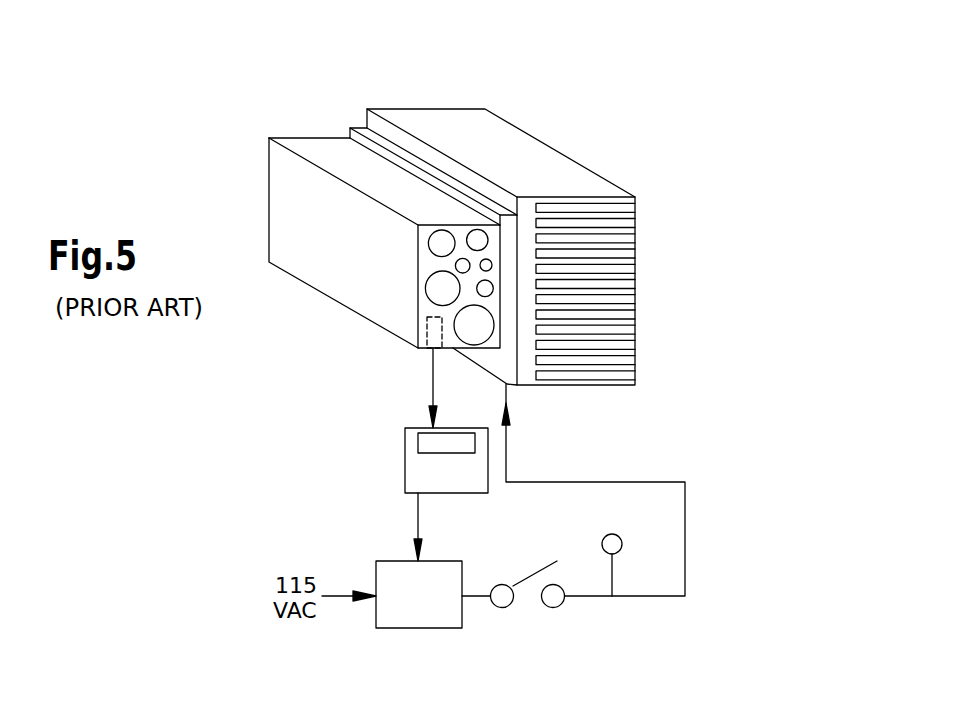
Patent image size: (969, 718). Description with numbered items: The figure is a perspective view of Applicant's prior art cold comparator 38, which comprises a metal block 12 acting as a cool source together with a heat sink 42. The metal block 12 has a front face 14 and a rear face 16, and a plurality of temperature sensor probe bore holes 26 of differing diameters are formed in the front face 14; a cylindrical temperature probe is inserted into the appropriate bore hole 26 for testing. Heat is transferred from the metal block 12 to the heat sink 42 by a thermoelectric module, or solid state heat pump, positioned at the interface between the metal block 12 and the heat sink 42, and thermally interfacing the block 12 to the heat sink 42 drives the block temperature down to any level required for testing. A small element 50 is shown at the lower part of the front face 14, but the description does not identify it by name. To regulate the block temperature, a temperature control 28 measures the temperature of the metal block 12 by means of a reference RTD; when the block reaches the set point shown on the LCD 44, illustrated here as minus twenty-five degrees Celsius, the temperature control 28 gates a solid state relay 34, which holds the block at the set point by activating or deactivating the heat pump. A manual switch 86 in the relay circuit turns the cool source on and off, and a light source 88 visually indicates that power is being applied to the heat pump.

The cold comparator 38 is at (357, 100).
The metal block 12 is at (285, 212).
The front face 14 is at (445, 338).
The rear face 16 is at (288, 173).
The temperature sensor probe bore holes 26 is at (403, 290).
The temperature sensor 50 is at (427, 333).
The heat sink 42 is at (500, 150).
The temperature control 28 is at (405, 472).
The LCD 44 is at (405, 438).
The solid state relay 34 is at (425, 628).
The manual switch 86 is at (528, 575).
The light source 88 is at (620, 533).